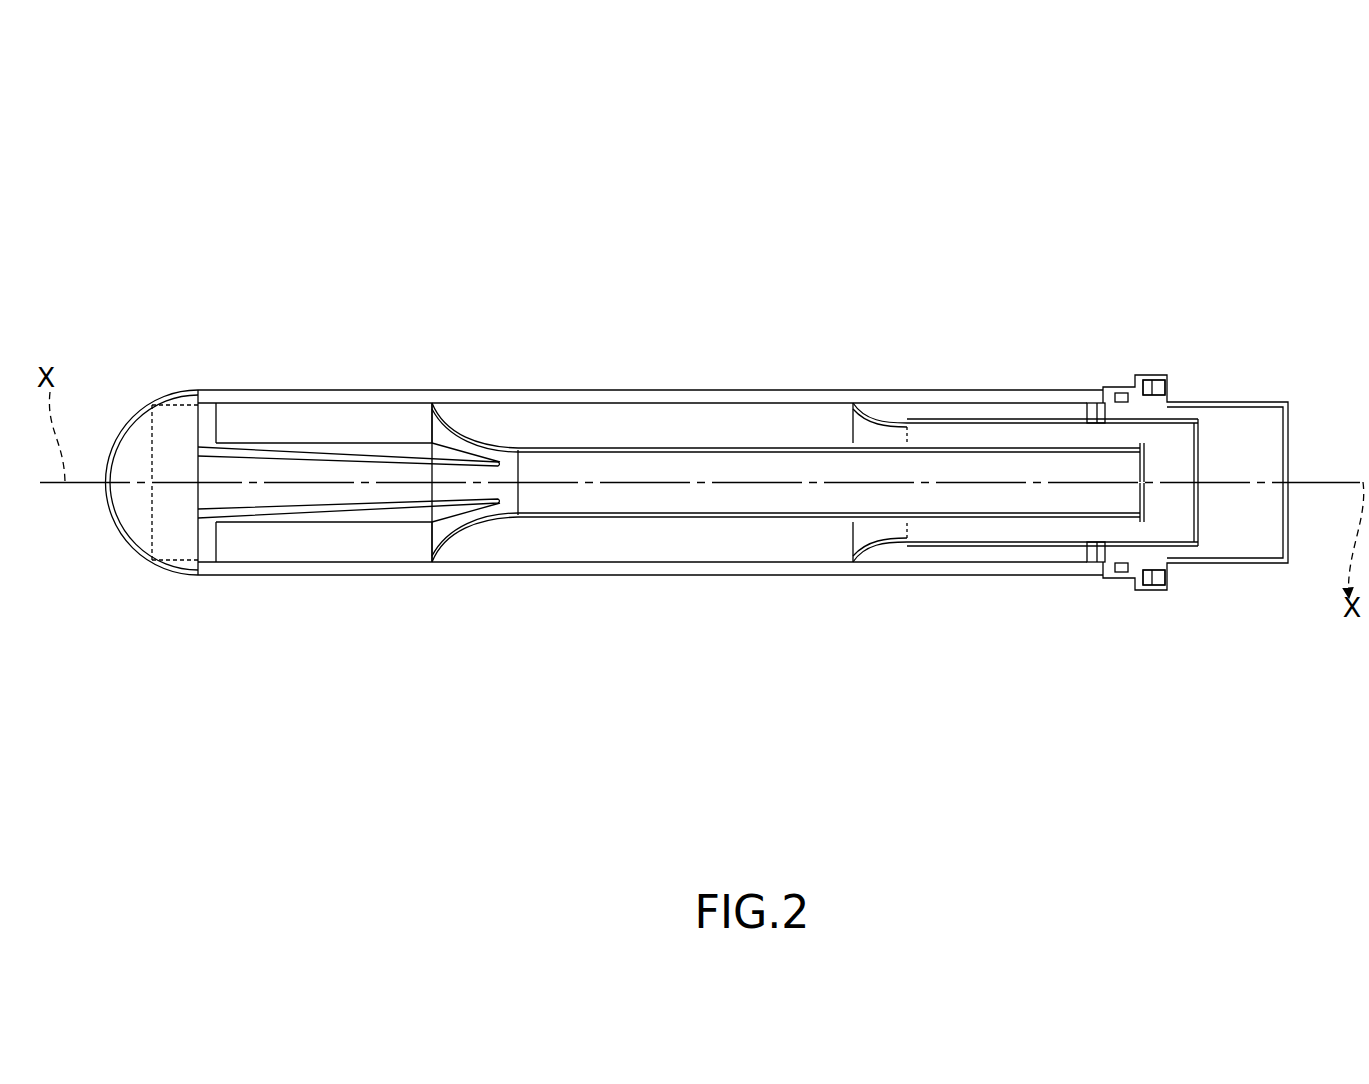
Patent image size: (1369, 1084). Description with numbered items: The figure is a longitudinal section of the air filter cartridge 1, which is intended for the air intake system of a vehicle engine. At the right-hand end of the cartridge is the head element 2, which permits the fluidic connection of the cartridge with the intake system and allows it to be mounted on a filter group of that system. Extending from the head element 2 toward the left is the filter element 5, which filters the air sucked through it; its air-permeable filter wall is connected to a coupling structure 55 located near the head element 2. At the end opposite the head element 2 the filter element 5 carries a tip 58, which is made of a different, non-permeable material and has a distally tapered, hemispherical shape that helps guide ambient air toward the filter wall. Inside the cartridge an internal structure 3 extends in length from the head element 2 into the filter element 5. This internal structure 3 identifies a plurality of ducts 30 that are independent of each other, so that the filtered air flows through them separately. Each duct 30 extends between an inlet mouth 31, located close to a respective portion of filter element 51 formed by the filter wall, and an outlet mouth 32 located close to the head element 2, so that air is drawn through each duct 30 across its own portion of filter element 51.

The air filter cartridge 1 is at (742, 203).
The head element 2 is at (1178, 626).
The internal structure 3 is at (181, 526).
The filter element 5 is at (498, 594).
The duct 30 is at (375, 474).
The inlet mouth 31 is at (341, 407).
The outlet mouth 32 is at (1175, 433).
The portion of filter element 51 is at (252, 400).
The coupling structure 55 is at (1118, 370).
The tip 58 is at (135, 450).